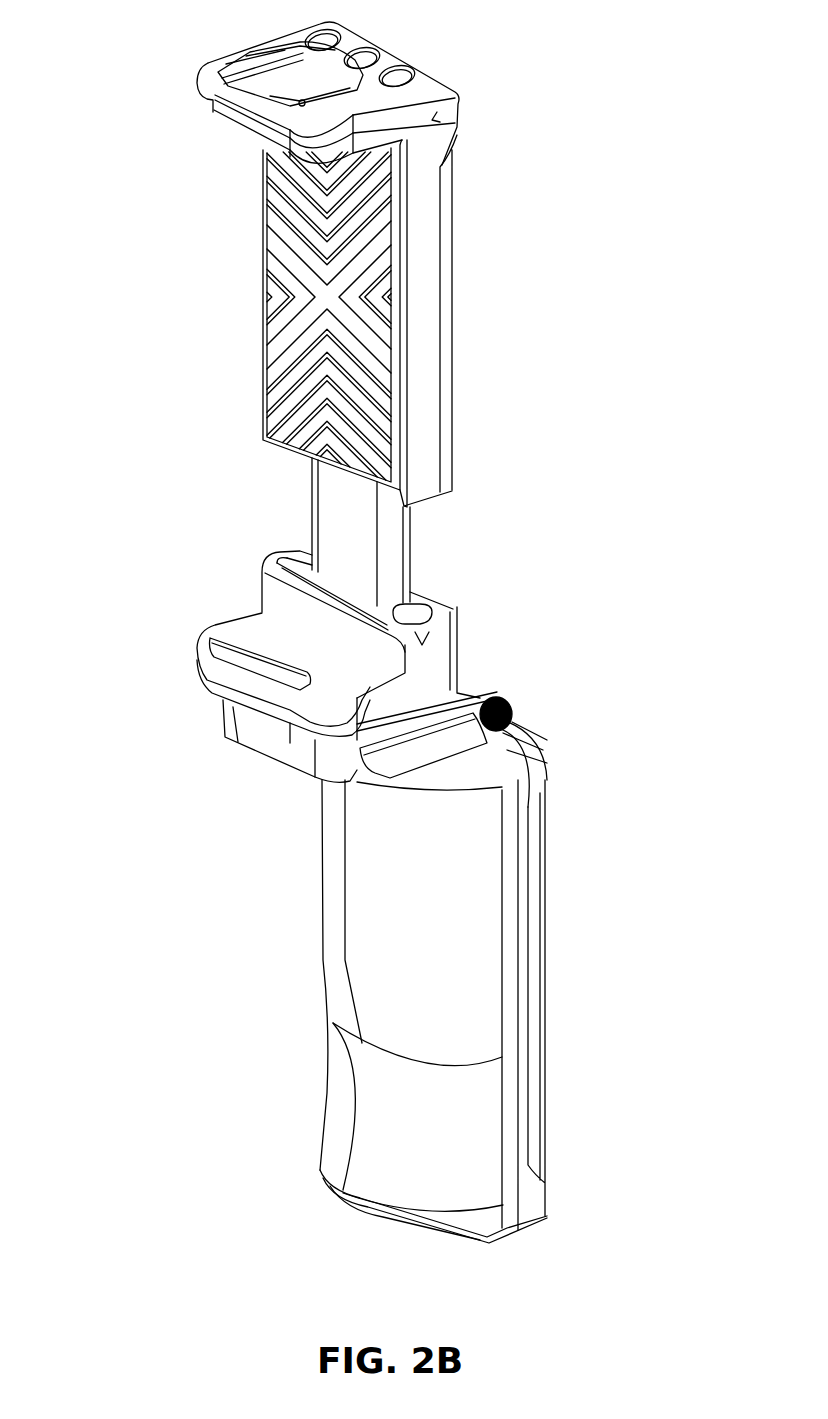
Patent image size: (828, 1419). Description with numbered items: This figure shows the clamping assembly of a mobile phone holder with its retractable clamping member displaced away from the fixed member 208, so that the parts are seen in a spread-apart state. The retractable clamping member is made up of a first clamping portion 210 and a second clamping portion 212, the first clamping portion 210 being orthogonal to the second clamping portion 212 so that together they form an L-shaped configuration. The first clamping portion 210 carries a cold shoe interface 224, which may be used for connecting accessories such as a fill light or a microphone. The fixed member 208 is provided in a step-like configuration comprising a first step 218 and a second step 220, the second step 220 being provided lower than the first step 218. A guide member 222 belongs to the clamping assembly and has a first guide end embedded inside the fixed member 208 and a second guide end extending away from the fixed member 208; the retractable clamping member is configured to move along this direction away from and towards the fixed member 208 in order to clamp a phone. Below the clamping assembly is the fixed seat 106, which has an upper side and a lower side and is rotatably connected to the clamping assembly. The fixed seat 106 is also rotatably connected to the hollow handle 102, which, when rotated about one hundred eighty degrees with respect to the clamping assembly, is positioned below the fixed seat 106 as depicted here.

The hollow handle 102 is at (467, 930).
The fixed seat 106 is at (290, 755).
The fixed member 208 is at (430, 683).
The first clamping portion 210 is at (278, 82).
The second clamping portion 212 is at (422, 330).
The first step 218 is at (260, 567).
The second step 220 is at (203, 637).
The guide member 222 is at (317, 540).
The cold shoe interface 224 is at (290, 74).